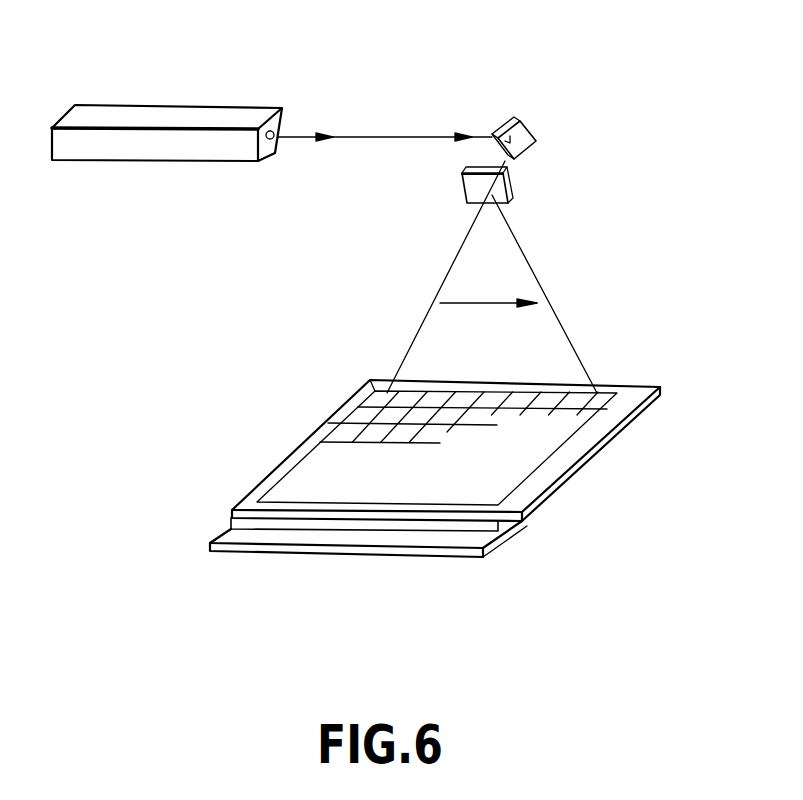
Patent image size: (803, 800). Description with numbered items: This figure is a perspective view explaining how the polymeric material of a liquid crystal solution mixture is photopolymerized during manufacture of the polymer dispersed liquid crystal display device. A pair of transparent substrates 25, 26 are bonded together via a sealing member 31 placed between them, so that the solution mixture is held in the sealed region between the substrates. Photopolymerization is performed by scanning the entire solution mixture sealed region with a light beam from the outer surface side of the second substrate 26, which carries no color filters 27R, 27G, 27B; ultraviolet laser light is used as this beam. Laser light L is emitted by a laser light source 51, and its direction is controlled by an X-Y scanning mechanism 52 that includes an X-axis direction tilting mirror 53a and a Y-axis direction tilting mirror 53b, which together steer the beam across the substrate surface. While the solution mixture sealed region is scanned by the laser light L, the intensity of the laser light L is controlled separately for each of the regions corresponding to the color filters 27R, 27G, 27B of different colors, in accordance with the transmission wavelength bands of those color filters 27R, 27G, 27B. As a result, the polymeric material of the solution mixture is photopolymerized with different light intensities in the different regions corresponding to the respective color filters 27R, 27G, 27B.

The laser light source 51 is at (198, 151).
The laser light L is at (413, 137).
The X-Y scanning mechanism 52 is at (517, 208).
The X-axis direction tilting mirror 53a is at (518, 128).
The Y-axis direction tilting mirror 53b is at (513, 192).
The second substrate 26 is at (446, 430).
The color filter 27R is at (373, 390).
The color filter 27G is at (416, 397).
The color filter 27B is at (443, 398).
The sealing member 31 is at (370, 530).
The first substrate 25 is at (501, 538).